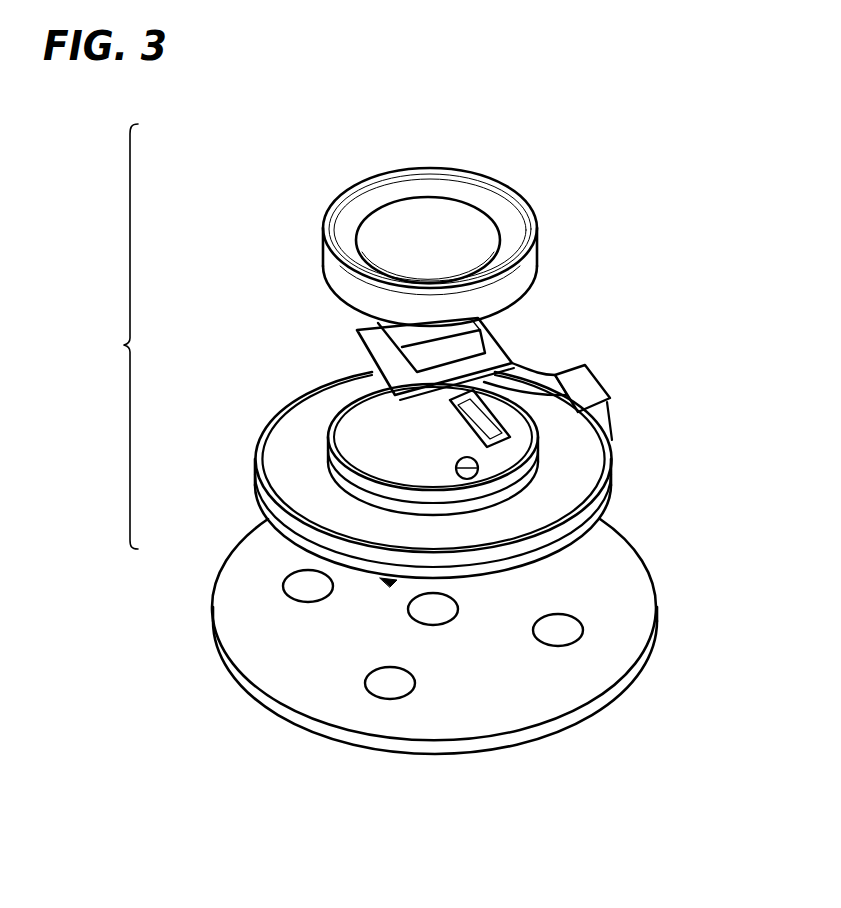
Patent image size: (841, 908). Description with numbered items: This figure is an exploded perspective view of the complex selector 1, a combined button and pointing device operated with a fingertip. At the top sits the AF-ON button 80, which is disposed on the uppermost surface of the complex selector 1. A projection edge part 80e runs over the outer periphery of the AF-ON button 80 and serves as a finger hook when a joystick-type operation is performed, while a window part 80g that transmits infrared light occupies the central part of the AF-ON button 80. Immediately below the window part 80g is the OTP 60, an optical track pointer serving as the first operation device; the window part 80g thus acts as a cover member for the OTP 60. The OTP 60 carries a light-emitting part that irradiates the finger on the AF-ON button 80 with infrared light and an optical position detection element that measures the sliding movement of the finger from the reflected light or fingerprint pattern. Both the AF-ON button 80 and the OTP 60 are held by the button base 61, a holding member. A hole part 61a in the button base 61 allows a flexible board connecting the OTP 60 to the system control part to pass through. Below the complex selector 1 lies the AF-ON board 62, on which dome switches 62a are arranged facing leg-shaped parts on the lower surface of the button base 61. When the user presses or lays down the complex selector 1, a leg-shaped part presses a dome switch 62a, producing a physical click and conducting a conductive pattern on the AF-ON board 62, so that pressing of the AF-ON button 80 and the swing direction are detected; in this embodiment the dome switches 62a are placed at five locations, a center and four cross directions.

The complex selector 1 is at (119, 336).
The AF-ON button 80 is at (444, 220).
The projection edge part 80e is at (455, 168).
The window part 80g is at (407, 247).
The OTP 60 is at (422, 342).
The button base 61 is at (439, 474).
The hole part 61a is at (477, 421).
The AF-ON board 62 is at (414, 633).
The dome switch 62a is at (388, 682).